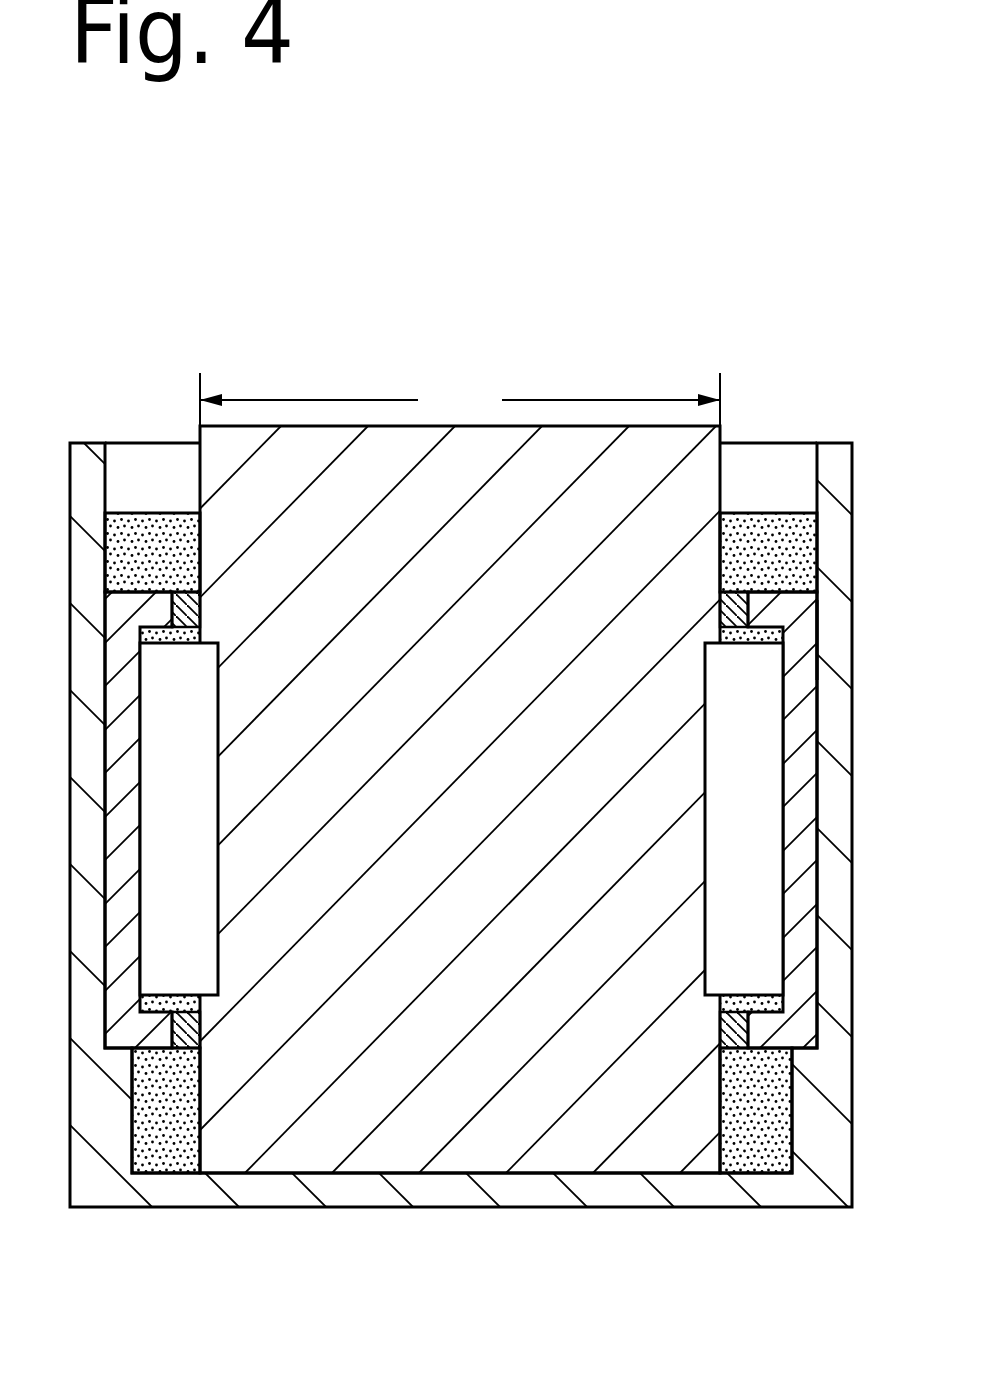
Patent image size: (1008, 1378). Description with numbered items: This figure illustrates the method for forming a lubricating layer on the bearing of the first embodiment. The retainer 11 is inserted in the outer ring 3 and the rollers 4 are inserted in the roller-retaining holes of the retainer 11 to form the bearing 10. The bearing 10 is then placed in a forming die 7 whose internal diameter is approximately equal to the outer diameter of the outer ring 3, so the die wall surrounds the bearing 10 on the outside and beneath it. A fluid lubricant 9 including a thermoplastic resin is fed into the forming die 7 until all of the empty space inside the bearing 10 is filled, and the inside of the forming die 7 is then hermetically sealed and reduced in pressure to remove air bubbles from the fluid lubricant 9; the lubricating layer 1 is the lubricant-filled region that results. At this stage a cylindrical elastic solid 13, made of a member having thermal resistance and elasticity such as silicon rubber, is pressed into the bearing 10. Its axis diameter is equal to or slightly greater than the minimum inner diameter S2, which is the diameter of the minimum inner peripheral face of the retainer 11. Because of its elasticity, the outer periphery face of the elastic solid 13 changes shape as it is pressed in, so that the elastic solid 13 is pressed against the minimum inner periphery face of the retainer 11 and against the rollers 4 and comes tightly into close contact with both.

The lubricating layer 1 is at (779, 560).
The outer ring 3 is at (128, 683).
The rollers 4 is at (162, 957).
The forming die 7 is at (830, 458).
The fluid lubricant 9 is at (130, 525).
The bearing 10 is at (822, 634).
The retainer 11 is at (188, 595).
The elastic solid 13 is at (514, 1140).
The minimum inner diameter S2 is at (460, 399).